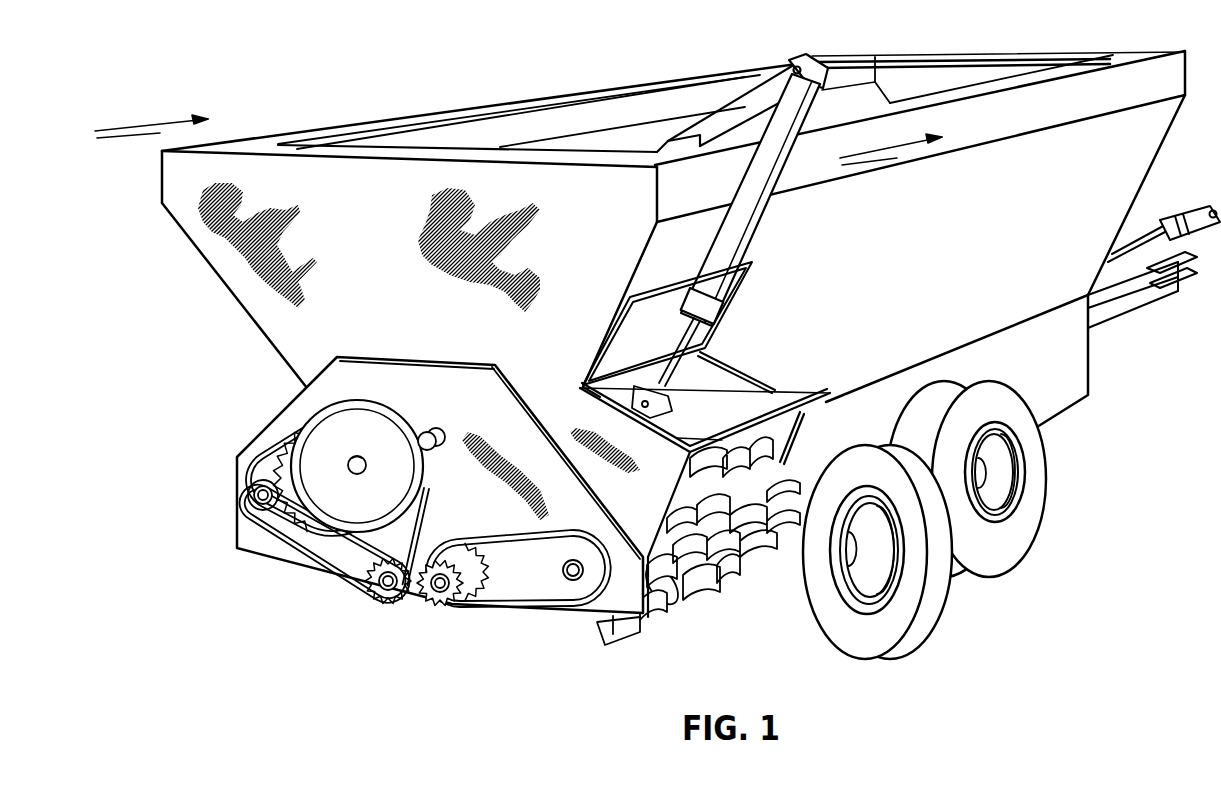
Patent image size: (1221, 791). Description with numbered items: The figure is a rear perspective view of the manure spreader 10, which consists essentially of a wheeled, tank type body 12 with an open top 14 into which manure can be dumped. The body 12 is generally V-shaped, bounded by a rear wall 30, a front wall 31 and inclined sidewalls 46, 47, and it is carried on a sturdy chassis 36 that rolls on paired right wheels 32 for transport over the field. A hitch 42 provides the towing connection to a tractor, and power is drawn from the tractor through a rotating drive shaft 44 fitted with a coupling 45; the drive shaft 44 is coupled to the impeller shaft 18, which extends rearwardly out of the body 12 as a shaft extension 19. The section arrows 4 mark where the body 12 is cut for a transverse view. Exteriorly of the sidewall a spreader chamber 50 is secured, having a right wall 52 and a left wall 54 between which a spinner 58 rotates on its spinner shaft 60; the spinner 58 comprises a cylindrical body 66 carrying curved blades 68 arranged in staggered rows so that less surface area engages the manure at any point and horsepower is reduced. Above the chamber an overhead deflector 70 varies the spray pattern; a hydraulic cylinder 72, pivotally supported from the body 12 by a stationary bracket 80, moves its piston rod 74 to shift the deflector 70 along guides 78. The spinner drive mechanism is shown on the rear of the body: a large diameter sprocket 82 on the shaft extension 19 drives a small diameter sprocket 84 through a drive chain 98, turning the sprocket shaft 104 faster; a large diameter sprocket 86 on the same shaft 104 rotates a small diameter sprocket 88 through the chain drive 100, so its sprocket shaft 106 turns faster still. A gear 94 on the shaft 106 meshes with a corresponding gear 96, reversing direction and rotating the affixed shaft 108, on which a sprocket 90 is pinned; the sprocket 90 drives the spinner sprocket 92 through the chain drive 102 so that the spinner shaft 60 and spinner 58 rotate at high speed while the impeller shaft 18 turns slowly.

The section line 4 is at (506, 145).
The manure spreader 10 is at (160, 170).
The body 12 is at (1048, 76).
The open top 14 is at (613, 138).
The impeller shaft 18 is at (424, 437).
The shaft extension 19 is at (362, 462).
The rear wall 30 is at (405, 263).
The front wall 31 is at (943, 80).
The right wheels 32 is at (1003, 572).
The chassis 36 is at (1072, 402).
The hitch 42 is at (1150, 305).
The drive shaft 44 is at (1137, 224).
The coupling 45 is at (1196, 207).
The inclined sidewall 46 is at (970, 236).
The inclined sidewall 47 is at (593, 96).
The spreader chamber 50 is at (766, 432).
The right wall 52 is at (757, 370).
The left wall 54 is at (510, 372).
The spinner 58 is at (628, 630).
The spinner shaft 60 is at (575, 585).
The cylindrical body 66 is at (637, 540).
The curved blades 68 is at (738, 590).
The overhead deflector 70 is at (720, 400).
The hydraulic cylinder 72 is at (772, 183).
The piston rod 74 is at (675, 352).
The guides 78 is at (670, 285).
The stationary bracket 80 is at (736, 104).
The large diameter sprocket 82 is at (350, 423).
The small diameter sprocket 84 is at (272, 512).
The large diameter sprocket 86 is at (277, 440).
The small diameter sprocket 88 is at (373, 577).
The sprocket 90 is at (497, 547).
The spinner sprocket 92 is at (558, 573).
The gear 94 is at (420, 543).
The gear 96 is at (450, 595).
The drive chain 98 is at (323, 397).
The chain drive 100 is at (330, 567).
The chain drive 102 is at (497, 607).
The sprocket shaft 104 is at (262, 495).
The sprocket shaft 106 is at (387, 588).
The shaft 108 is at (438, 588).